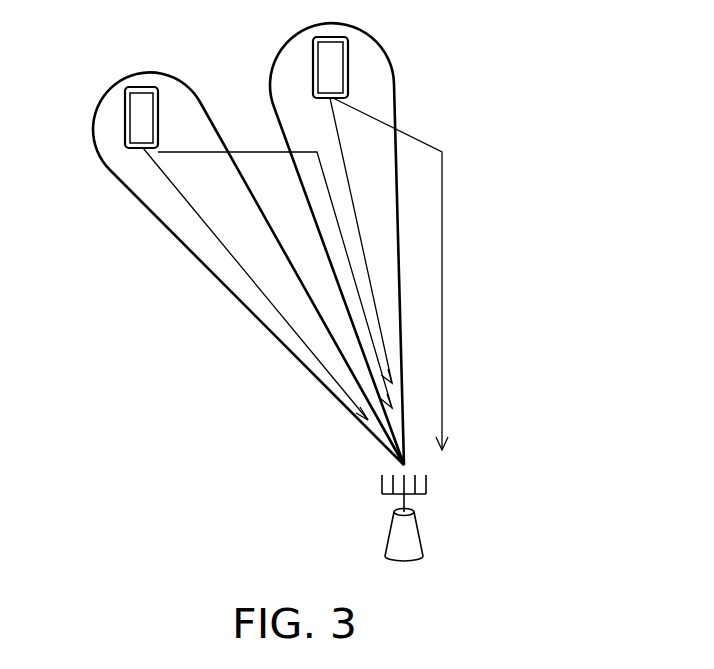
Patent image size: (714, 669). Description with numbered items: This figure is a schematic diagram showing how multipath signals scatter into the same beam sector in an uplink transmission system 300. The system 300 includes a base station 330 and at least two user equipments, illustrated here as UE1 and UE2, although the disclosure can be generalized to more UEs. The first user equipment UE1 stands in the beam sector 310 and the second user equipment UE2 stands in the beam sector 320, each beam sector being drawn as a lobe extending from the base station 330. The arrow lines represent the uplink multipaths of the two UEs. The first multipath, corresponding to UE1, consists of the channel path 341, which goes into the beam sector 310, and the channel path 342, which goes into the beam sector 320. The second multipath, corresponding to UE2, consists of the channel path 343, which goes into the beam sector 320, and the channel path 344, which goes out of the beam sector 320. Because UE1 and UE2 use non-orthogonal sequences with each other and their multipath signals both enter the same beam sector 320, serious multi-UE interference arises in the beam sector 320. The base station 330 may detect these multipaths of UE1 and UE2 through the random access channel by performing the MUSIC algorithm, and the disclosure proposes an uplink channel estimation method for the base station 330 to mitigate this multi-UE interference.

The uplink transmission system 300 is at (619, 565).
The beam sector 310 is at (107, 137).
The beam sector 320 is at (374, 80).
The base station 330 is at (412, 538).
The channel path 341 is at (215, 238).
The channel path 342 is at (256, 150).
The channel path 343 is at (368, 271).
The channel path 344 is at (442, 205).
The user equipment UE1 is at (125, 107).
The user equipment UE2 is at (312, 62).